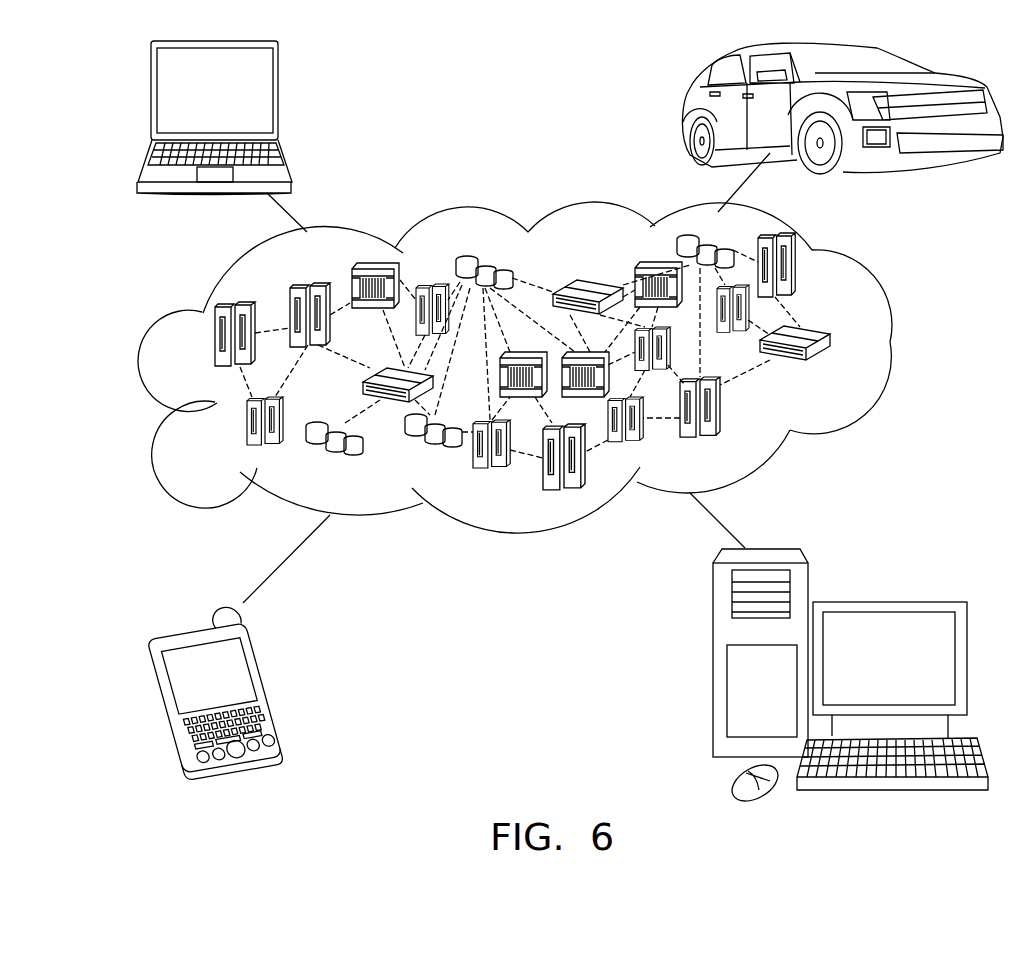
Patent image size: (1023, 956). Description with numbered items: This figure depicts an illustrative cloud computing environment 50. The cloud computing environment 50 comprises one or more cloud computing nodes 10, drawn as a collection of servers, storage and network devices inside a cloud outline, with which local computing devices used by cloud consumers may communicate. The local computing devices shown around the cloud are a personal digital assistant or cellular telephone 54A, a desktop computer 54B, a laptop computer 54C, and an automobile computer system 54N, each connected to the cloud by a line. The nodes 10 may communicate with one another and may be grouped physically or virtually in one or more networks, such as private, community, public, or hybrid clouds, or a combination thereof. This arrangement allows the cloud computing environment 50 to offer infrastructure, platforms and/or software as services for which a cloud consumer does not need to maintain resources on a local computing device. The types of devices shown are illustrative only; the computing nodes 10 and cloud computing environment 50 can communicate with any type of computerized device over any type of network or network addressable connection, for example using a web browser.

The cloud computing nodes 10 is at (838, 370).
The cloud computing environment 50 is at (887, 342).
The personal digital assistant (PDA) or cellular telephone 54A is at (270, 688).
The desktop computer 54B is at (887, 598).
The laptop computer 54C is at (277, 97).
The automobile computer system 54N is at (686, 110).